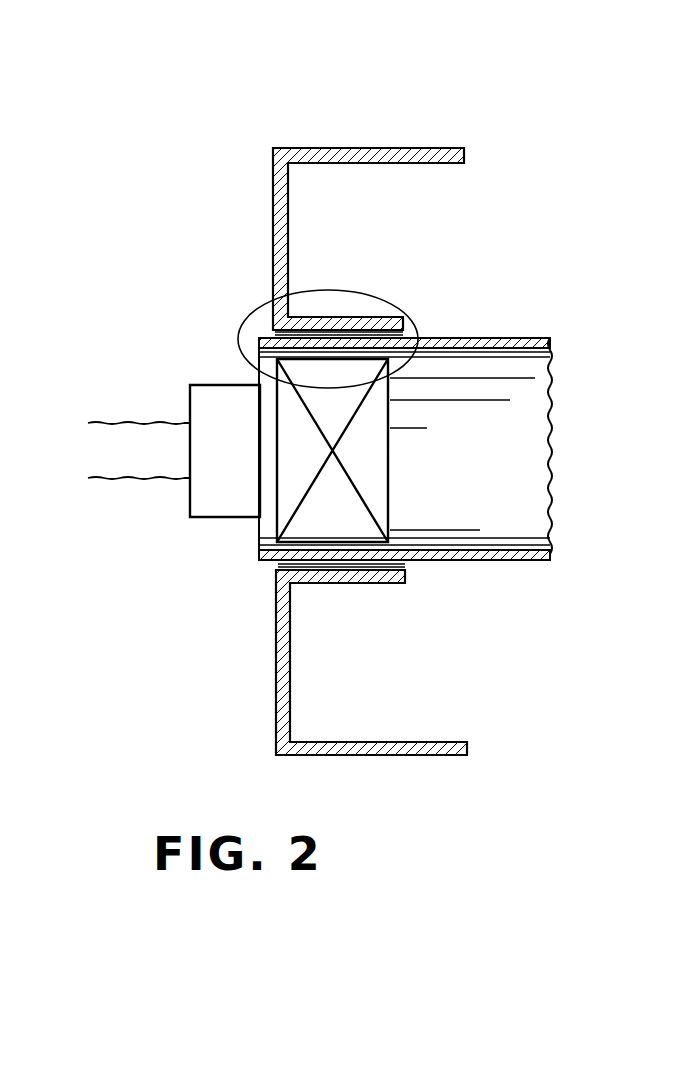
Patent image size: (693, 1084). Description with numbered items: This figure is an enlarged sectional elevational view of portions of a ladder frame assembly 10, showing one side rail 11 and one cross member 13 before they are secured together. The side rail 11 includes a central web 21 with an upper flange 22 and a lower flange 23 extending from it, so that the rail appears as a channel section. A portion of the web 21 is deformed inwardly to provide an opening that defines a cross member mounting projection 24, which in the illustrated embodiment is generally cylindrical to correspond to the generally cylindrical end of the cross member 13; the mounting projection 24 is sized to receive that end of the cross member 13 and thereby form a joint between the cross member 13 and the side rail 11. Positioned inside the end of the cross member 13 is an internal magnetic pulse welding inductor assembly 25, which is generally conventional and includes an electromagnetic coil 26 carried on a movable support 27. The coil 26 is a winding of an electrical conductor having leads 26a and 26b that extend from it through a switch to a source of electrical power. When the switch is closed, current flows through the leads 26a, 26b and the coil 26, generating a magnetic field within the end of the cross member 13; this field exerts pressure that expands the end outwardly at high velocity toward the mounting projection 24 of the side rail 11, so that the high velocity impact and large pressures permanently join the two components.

The ladder frame assembly 10 is at (333, 454).
The side rail 11 is at (316, 454).
The cross member 13 is at (485, 557).
The central web 21 is at (273, 230).
The upper flange 22 is at (377, 148).
The lower flange 23 is at (397, 747).
The cross member mounting projection 24 is at (362, 320).
The magnetic pulse welding inductor assembly 25 is at (256, 485).
The electromagnetic coil 26 is at (377, 443).
The lead 26a is at (122, 482).
The lead 26b is at (113, 420).
The movable support 27 is at (207, 393).